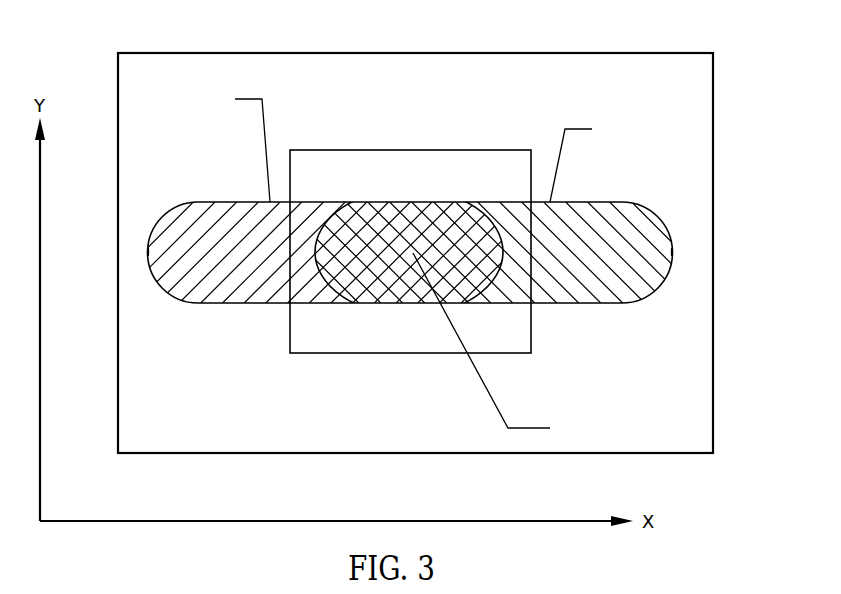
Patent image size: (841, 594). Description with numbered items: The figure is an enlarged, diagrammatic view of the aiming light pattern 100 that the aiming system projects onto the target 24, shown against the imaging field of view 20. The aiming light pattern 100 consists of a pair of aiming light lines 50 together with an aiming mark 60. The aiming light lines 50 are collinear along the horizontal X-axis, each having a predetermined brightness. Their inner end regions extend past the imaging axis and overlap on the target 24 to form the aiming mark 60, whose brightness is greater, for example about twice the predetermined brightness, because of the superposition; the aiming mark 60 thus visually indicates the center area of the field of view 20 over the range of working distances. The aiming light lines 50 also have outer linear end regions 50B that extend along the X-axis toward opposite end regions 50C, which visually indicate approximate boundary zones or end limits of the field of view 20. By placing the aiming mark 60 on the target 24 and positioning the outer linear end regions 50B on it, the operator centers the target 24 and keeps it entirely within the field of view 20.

The imaging field of view 20 is at (510, 89).
The target 24 is at (407, 338).
The aiming light pattern 100 is at (407, 256).
The aiming light lines 50 is at (228, 303).
The outer linear end regions 50B is at (165, 278).
The opposite end regions 50C is at (148, 252).
The aiming mark 60 is at (404, 220).